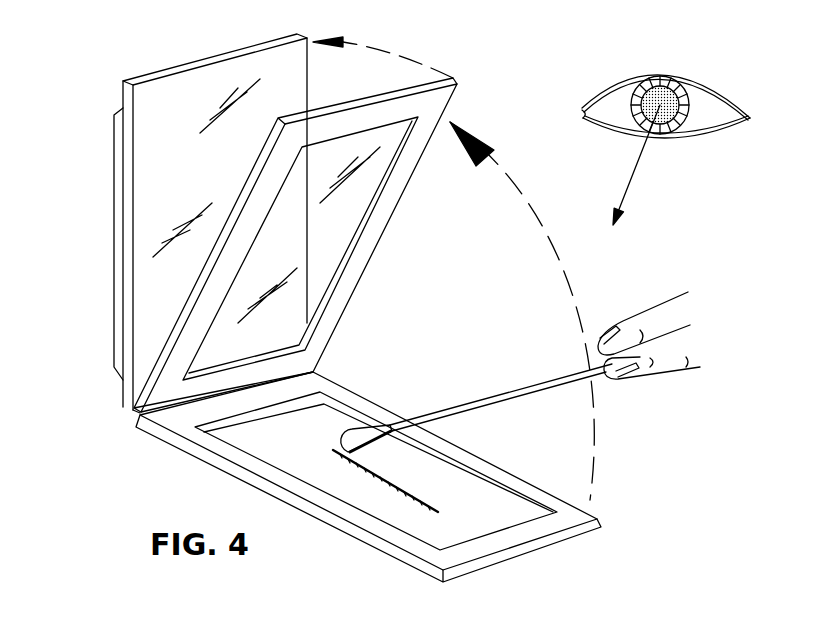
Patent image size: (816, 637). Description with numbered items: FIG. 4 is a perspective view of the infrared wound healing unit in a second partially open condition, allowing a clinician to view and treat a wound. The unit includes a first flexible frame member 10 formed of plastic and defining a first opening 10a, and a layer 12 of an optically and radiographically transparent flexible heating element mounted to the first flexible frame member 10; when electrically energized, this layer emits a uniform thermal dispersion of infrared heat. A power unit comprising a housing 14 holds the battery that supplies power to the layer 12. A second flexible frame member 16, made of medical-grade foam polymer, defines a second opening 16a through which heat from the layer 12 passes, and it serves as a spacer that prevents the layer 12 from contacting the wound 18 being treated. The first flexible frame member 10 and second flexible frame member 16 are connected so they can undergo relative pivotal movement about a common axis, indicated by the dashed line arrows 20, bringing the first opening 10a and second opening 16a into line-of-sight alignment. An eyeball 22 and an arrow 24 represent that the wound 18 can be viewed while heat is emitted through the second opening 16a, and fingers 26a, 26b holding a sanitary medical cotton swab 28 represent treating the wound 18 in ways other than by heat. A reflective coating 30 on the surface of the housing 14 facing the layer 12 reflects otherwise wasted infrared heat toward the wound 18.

The first flexible frame member 10 is at (453, 80).
The first opening 10a is at (387, 211).
The layer of optically and radiographically transparent flexible heating element 12 is at (333, 223).
The housing 14 is at (113, 235).
The second flexible frame member 16 is at (557, 540).
The second opening 16a is at (473, 537).
The wound 18 is at (423, 505).
The dashed line arrows 20 is at (422, 77).
The eyeball 22 is at (687, 77).
The arrow 24 is at (638, 163).
The finger 26a is at (676, 304).
The finger 26b is at (697, 363).
The sanitary medical cotton swab 28 is at (350, 432).
The reflective coating 30 is at (225, 72).